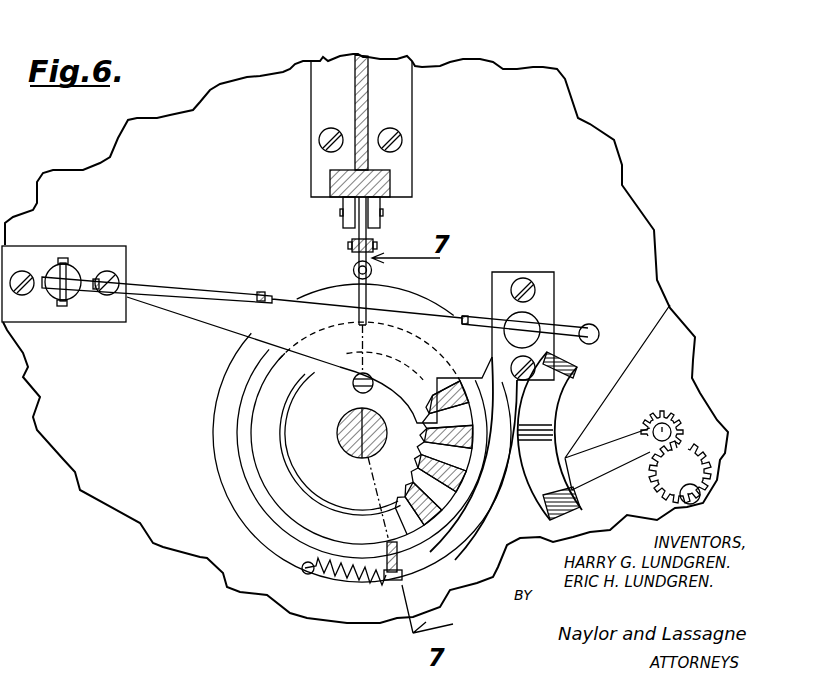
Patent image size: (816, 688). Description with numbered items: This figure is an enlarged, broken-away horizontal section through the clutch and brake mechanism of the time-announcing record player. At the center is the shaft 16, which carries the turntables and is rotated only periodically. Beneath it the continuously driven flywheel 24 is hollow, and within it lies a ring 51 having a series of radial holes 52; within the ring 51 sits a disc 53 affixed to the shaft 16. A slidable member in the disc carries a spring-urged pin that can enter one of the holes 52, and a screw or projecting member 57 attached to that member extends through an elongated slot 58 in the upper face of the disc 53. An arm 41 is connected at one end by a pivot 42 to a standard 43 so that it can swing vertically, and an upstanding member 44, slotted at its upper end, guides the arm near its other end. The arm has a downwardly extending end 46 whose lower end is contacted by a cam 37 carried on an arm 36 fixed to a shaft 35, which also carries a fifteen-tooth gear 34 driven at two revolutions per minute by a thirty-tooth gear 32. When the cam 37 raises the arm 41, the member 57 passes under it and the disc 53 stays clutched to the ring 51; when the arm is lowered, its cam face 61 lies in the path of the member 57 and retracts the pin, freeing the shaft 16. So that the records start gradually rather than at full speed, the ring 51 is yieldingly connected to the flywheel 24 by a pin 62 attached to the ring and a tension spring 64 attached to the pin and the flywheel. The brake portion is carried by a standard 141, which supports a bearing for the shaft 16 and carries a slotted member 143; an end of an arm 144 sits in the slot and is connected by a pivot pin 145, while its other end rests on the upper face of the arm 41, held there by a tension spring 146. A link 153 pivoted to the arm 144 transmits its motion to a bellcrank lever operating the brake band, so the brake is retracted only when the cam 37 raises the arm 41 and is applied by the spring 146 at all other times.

The shaft 16 is at (352, 441).
The flywheel 24 is at (215, 446).
The gear 32 is at (700, 463).
The gear 34 is at (683, 433).
The shaft 35 is at (668, 415).
The arm 36 is at (594, 410).
The cam 37 is at (553, 380).
The arm 41 is at (212, 303).
The pivot 42 is at (62, 307).
The standard 43 is at (67, 273).
The upstanding member 44 is at (530, 313).
The downwardly extending end 46 is at (590, 324).
The ring 51 is at (337, 529).
The radial holes 52 is at (440, 510).
The disc 53 is at (335, 483).
The projecting member 57 is at (366, 392).
The elongated slot 58 is at (370, 368).
The cam face 61 is at (314, 430).
The pin 62 is at (407, 566).
The tension spring 64 is at (378, 590).
The standard 141 is at (360, 186).
The slotted member 143 is at (347, 200).
The arm 144 is at (358, 233).
The pivot pin 145 is at (340, 213).
The tension spring 146 is at (352, 270).
The link 153 is at (350, 247).